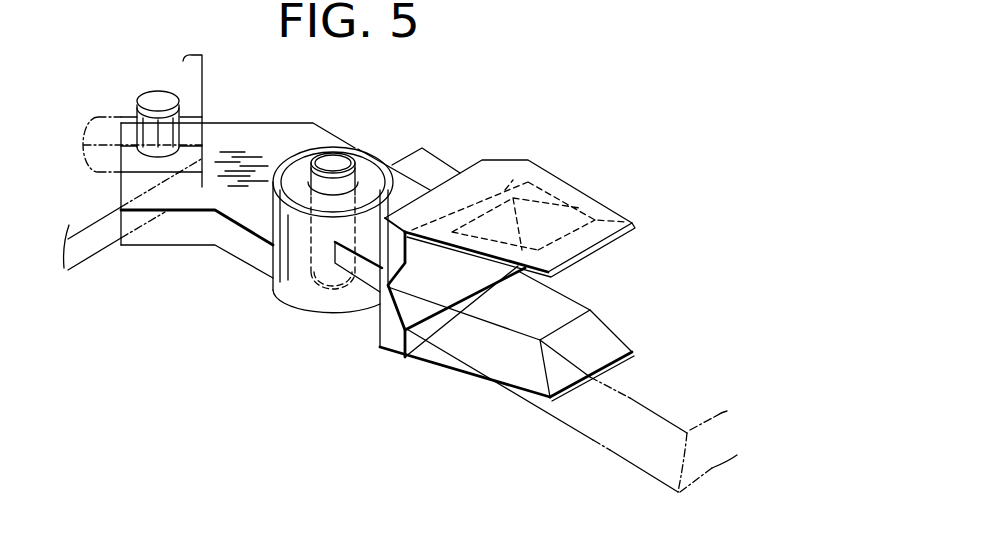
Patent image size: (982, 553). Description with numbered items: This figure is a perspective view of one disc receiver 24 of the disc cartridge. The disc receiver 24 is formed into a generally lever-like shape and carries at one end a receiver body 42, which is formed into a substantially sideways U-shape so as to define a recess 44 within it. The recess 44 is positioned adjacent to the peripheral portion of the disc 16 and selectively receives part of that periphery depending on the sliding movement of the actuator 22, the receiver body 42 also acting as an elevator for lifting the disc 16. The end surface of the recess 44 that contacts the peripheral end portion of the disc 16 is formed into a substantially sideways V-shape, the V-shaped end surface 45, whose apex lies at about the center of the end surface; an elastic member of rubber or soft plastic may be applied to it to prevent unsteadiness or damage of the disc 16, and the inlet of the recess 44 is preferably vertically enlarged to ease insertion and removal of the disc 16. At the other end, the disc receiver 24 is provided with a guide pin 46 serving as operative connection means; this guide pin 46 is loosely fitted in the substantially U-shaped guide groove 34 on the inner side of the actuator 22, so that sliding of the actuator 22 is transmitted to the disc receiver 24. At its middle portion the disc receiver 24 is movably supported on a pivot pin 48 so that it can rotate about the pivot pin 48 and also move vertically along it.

The disc 16 is at (623, 450).
The actuator 22 is at (112, 243).
The disc receiver 24 is at (273, 137).
The guide groove 34 is at (102, 122).
The receiver body 42 is at (398, 350).
The recess 44 is at (498, 275).
The V-shaped end surface 45 is at (536, 190).
The guide pin 46 is at (147, 98).
The pivot pin 48 is at (342, 160).